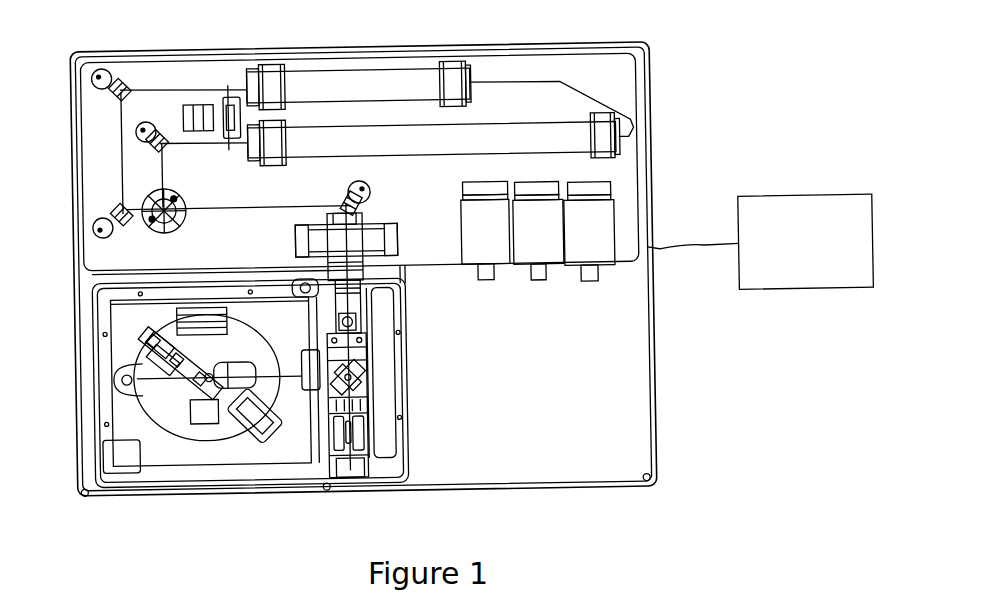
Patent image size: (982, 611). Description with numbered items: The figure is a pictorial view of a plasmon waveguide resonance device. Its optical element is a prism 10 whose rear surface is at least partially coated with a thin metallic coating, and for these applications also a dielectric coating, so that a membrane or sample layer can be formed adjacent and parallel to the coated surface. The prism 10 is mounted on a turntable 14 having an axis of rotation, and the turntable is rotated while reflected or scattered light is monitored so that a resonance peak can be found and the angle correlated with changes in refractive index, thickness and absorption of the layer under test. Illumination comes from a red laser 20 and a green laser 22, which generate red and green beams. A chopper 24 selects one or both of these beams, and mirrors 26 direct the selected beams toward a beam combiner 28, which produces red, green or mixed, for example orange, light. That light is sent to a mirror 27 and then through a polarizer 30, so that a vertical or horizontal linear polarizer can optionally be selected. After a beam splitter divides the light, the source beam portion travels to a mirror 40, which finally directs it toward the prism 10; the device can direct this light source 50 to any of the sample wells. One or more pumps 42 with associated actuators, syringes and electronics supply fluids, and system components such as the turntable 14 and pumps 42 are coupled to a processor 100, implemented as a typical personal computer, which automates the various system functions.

The prism 10 is at (208, 384).
The turntable 14 is at (167, 415).
The red laser 20 is at (408, 81).
The green laser 22 is at (492, 137).
The chopper 24 is at (226, 96).
The mirrors 26 is at (150, 139).
The mirror 27 is at (338, 203).
The beam combiner 28 is at (183, 222).
The polarizer 30 is at (393, 241).
The mirror 40 is at (368, 380).
The pumps 42 is at (582, 256).
The light source 50 is at (298, 394).
The processor 100 is at (790, 297).